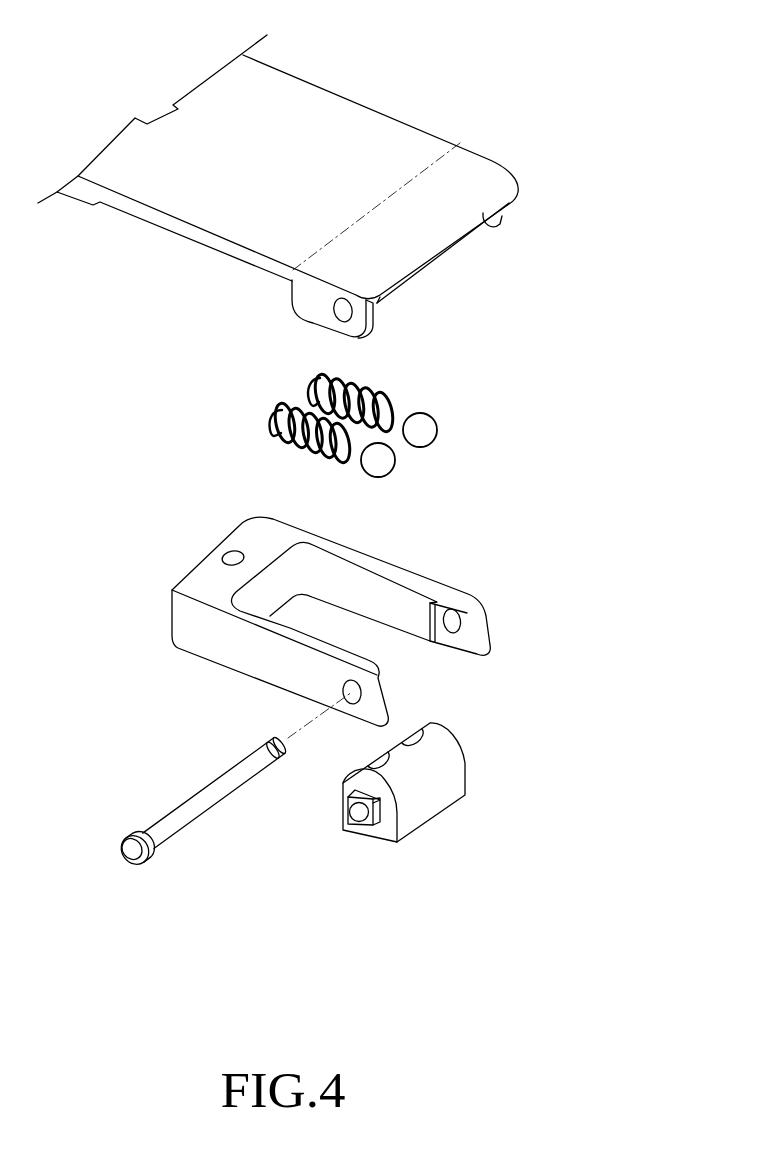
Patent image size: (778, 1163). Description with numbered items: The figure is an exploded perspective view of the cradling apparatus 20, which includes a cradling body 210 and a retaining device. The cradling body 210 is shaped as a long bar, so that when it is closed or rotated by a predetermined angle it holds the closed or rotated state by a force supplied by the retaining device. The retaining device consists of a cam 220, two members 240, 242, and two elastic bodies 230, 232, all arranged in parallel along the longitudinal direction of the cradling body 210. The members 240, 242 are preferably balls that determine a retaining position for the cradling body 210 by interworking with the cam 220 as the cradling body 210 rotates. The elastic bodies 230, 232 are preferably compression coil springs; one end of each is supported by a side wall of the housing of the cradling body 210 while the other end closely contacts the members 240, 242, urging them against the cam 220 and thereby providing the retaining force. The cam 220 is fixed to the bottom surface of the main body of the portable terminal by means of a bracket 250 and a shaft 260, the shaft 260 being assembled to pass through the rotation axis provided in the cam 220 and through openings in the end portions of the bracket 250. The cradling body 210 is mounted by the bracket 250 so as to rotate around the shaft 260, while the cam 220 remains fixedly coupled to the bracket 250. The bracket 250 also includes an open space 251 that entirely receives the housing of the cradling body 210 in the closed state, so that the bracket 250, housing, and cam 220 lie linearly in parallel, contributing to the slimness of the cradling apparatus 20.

The cradling apparatus 20 is at (35, 76).
The cradling body 210 is at (383, 133).
The cam 220 is at (470, 740).
The elastic body 230 is at (393, 400).
The elastic body 232 is at (263, 422).
The member 240 is at (433, 427).
The member 242 is at (385, 465).
The bracket 250 is at (284, 628).
The open space 251 is at (343, 630).
The shaft 260 is at (202, 803).